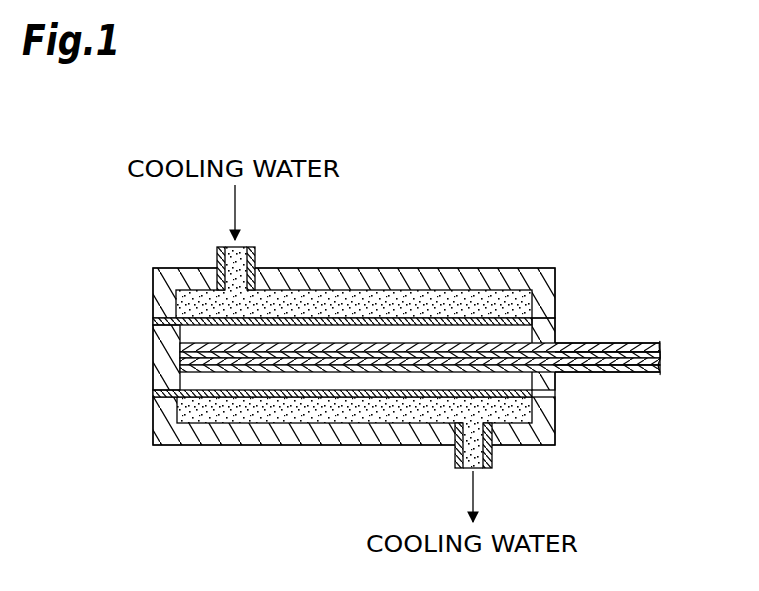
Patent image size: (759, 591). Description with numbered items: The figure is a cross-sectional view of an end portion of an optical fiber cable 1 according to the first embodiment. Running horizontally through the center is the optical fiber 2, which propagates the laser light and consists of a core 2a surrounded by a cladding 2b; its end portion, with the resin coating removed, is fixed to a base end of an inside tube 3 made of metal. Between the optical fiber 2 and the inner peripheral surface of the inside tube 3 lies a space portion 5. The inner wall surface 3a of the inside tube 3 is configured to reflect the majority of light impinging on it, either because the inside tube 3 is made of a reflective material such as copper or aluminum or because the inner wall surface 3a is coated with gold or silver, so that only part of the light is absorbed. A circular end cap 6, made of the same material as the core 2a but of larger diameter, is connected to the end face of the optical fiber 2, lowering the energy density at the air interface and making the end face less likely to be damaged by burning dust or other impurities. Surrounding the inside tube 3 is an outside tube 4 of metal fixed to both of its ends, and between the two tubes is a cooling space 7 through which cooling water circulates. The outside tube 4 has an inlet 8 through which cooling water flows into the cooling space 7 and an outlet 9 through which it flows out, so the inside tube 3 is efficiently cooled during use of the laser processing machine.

The optical fiber cable 1 is at (545, 217).
The optical fiber 2 is at (634, 340).
The core 2a is at (660, 353).
The cladding 2b is at (660, 368).
The inside tube 3 is at (305, 397).
The inner wall surface 3a is at (368, 393).
The outside tube 4 is at (238, 436).
The space portion 5 is at (388, 341).
The end cap 6 is at (162, 356).
The cooling space 7 is at (477, 293).
The inlet 8 is at (244, 248).
The outlet 9 is at (480, 469).